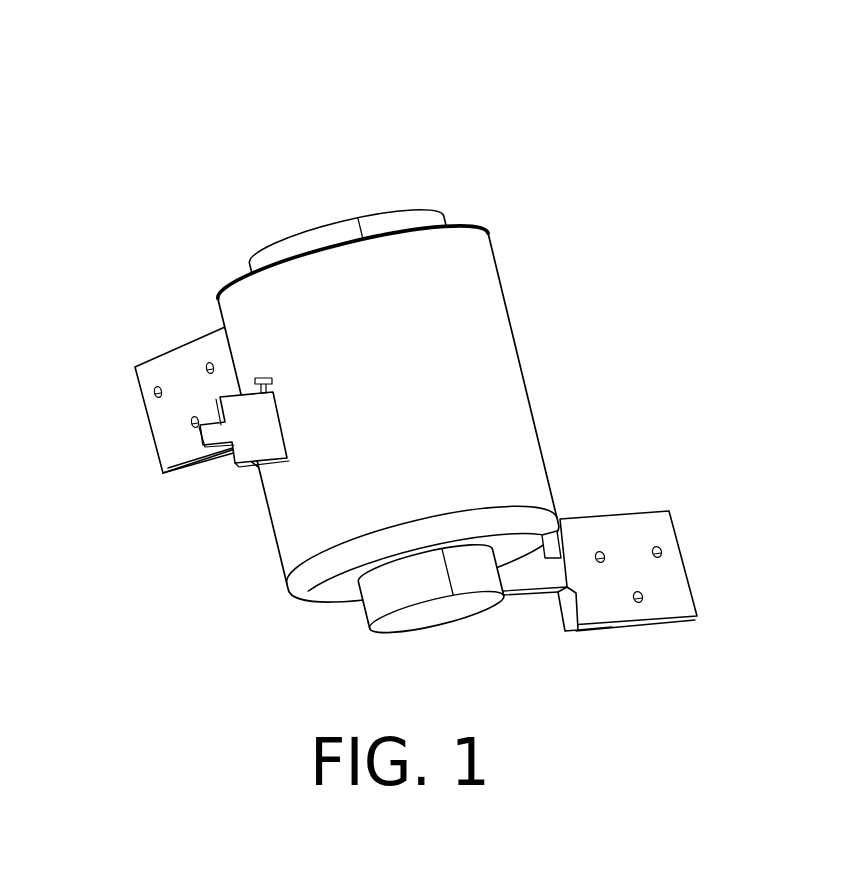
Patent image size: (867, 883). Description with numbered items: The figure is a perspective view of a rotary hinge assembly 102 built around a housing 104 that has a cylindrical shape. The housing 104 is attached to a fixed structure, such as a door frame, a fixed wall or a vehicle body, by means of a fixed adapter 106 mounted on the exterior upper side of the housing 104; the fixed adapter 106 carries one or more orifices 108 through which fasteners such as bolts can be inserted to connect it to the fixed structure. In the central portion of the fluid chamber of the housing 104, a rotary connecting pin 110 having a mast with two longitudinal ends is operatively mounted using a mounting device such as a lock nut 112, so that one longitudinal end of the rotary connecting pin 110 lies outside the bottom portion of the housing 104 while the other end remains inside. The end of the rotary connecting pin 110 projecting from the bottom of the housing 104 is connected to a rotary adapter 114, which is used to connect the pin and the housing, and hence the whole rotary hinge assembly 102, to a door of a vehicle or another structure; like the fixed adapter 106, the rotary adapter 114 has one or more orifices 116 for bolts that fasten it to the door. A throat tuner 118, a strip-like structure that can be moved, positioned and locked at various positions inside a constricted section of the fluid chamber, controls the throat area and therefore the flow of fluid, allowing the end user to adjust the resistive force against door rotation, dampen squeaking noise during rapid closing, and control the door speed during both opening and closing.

The rotary hinge assembly 102 is at (178, 60).
The housing 104 is at (216, 309).
The fixed adapter 106 is at (183, 470).
The orifices 108 is at (157, 388).
The rotary connecting pin 110 is at (421, 628).
The lock nut 112 is at (417, 210).
The rotary adapter 114 is at (593, 632).
The orifices 116 is at (655, 547).
The throat tuner 118 is at (243, 467).